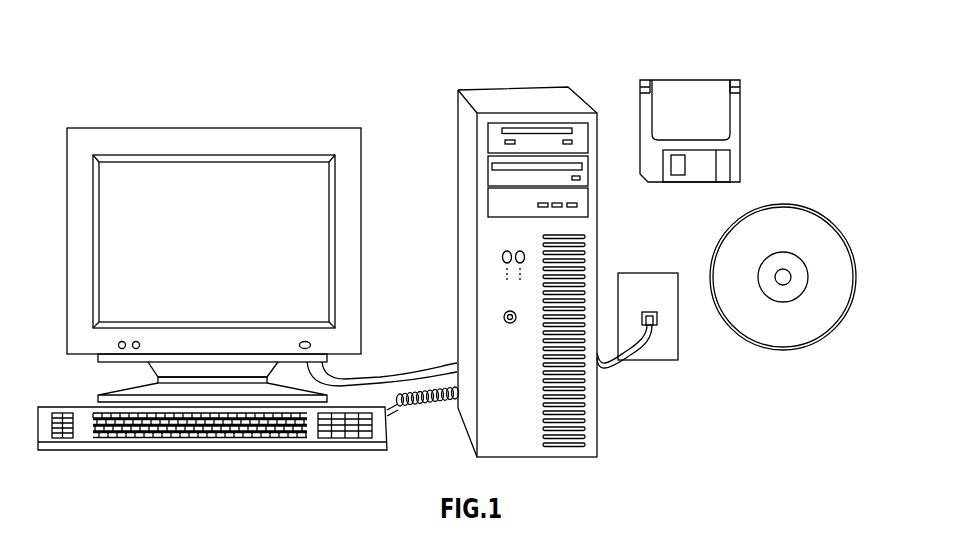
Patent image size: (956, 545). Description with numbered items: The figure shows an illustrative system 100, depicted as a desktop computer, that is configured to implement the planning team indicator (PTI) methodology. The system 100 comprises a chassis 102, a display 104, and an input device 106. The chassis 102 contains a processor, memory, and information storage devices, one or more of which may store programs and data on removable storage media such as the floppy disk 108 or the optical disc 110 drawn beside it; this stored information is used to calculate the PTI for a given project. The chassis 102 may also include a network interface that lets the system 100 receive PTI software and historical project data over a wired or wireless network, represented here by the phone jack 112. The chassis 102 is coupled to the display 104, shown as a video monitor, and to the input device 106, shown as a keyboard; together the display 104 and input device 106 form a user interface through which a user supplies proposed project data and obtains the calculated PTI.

The system 100 is at (608, 80).
The chassis 102 is at (456, 311).
The display 104 is at (82, 357).
The input device 106 is at (80, 448).
The floppy disk 108 is at (740, 164).
The optical disc 110 is at (795, 205).
The phone jack 112 is at (640, 273).